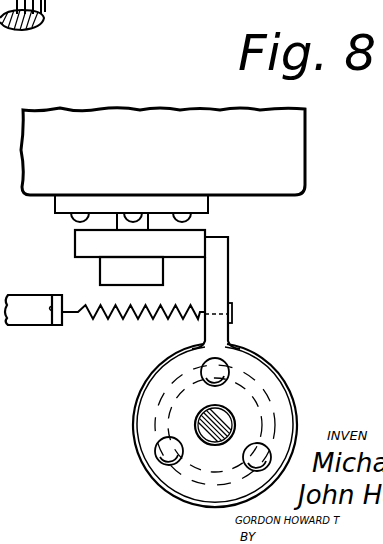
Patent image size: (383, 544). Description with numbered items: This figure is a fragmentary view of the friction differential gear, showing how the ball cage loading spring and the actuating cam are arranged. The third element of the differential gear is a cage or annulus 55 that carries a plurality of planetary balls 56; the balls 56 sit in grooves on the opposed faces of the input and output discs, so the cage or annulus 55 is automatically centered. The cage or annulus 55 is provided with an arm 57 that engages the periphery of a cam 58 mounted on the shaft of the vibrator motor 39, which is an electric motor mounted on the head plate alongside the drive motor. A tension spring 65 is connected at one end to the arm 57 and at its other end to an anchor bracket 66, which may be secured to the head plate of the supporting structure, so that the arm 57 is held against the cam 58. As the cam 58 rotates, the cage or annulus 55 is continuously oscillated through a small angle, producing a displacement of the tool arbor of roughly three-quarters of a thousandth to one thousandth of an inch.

The vibrator motor 39 is at (160, 125).
The cage or annulus 55 is at (201, 494).
The balls 56 is at (257, 443).
The arm 57 is at (217, 266).
The cam 58 is at (83, 240).
The tension spring 65 is at (110, 316).
The anchor bracket 66 is at (27, 315).